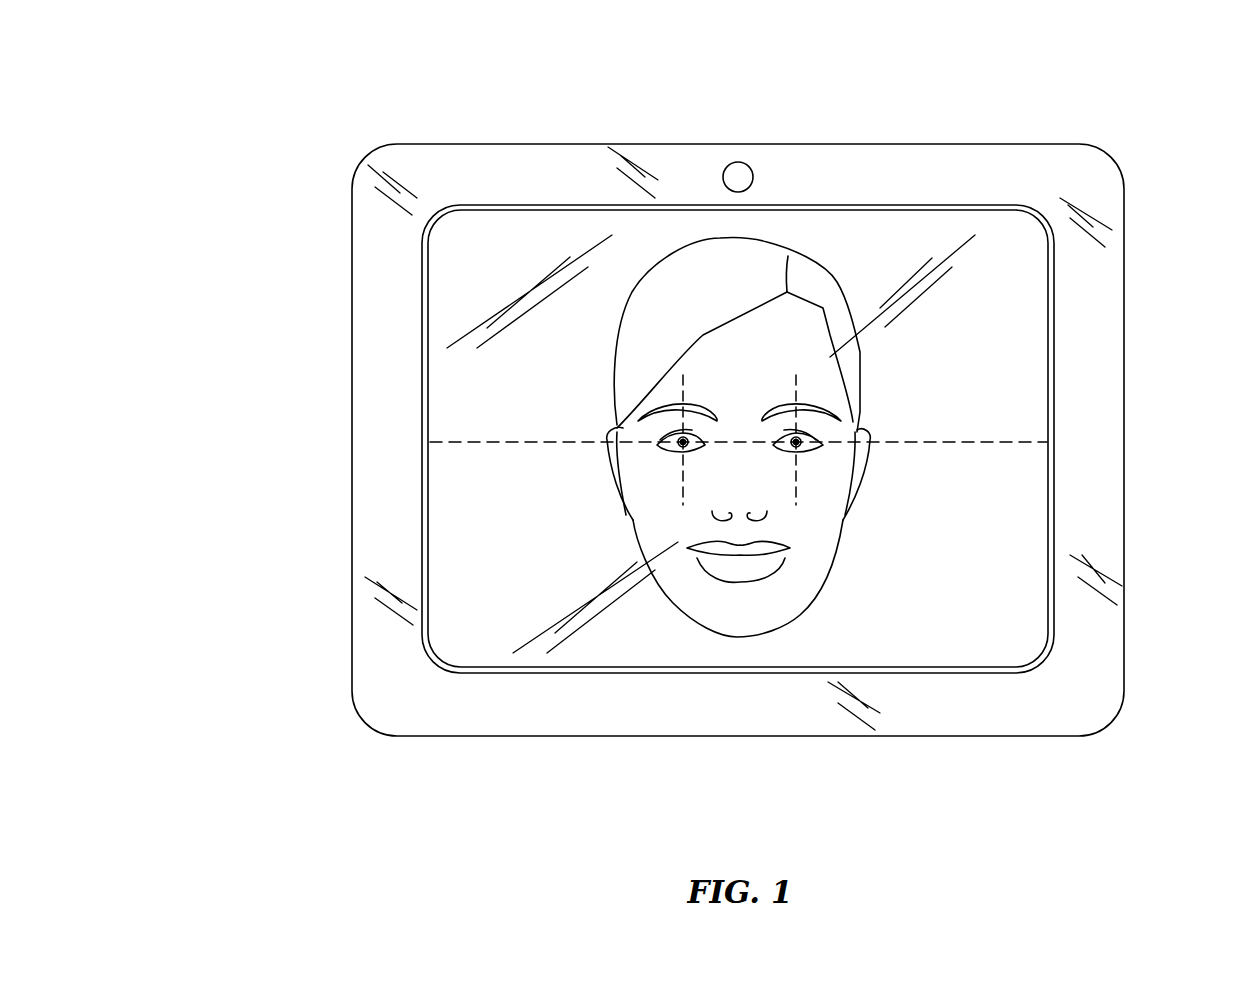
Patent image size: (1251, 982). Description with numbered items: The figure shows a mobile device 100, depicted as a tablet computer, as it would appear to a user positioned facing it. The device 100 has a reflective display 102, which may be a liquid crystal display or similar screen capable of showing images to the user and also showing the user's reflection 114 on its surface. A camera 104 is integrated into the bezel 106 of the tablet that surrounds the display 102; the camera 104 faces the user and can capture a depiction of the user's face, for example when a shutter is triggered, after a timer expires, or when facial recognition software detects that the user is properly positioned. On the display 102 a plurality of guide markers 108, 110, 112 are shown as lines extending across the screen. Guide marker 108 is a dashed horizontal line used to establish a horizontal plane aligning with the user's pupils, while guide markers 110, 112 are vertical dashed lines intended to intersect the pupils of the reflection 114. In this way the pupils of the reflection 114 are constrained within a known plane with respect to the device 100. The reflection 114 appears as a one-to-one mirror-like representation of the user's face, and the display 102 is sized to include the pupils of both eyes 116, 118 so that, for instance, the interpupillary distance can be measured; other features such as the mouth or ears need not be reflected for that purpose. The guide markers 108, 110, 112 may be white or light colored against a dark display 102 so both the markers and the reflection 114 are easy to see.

The mobile device 100 is at (240, 102).
The reflective display 102 is at (1008, 228).
The camera 104 is at (740, 168).
The bezel 106 is at (1098, 402).
The guide marker 108 is at (442, 442).
The guide marker 110 is at (667, 400).
The guide marker 112 is at (797, 392).
The reflection 114 is at (723, 622).
The eye 116 is at (673, 446).
The eye 118 is at (810, 447).